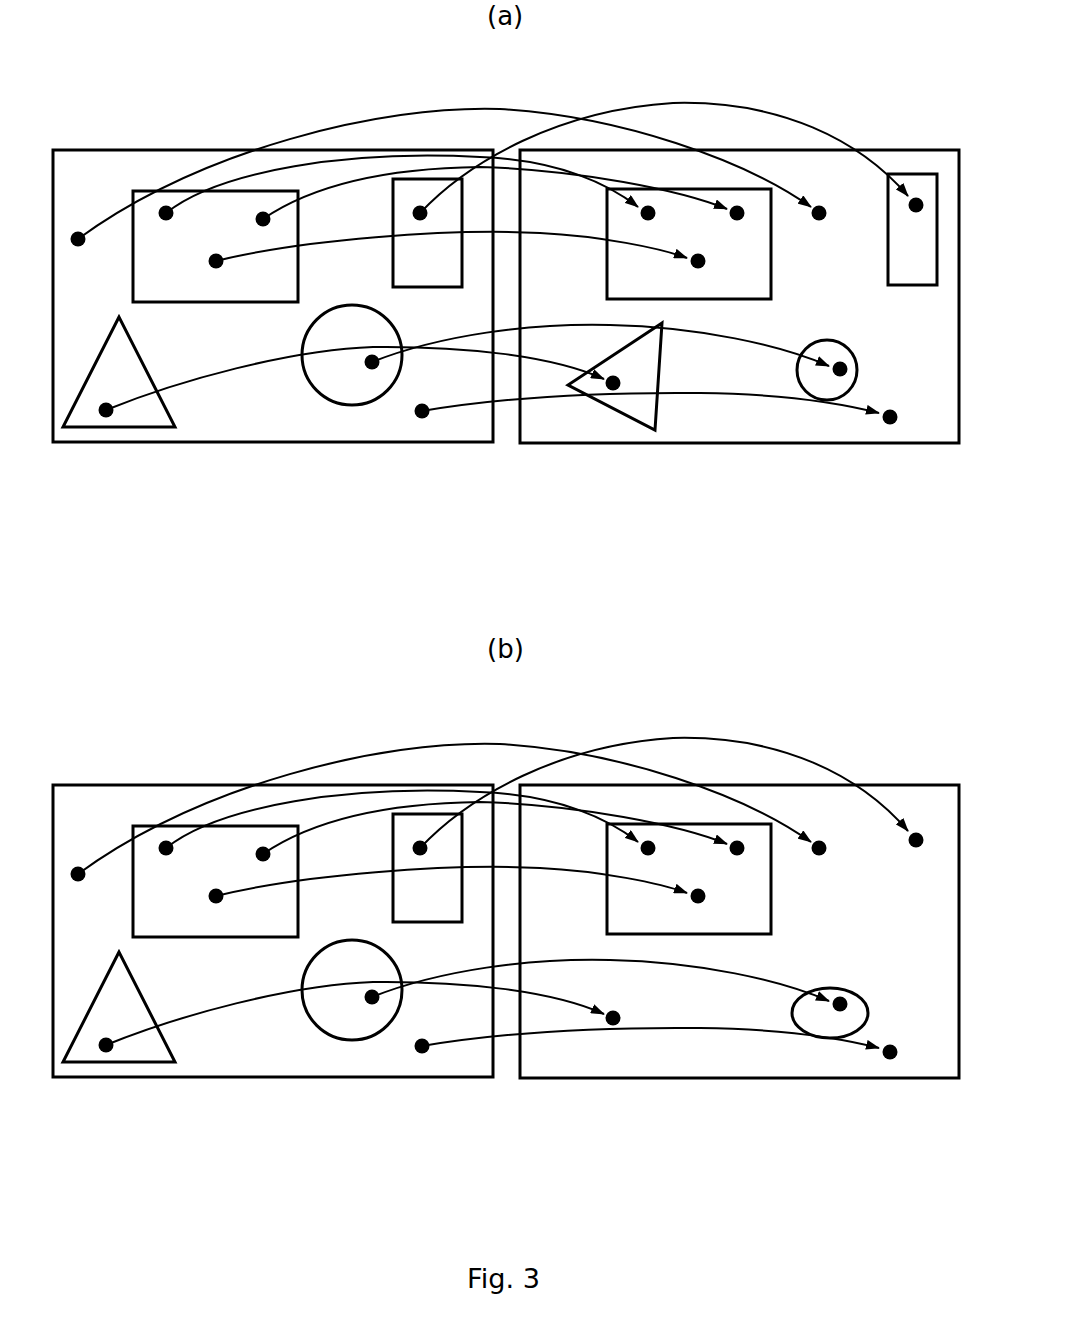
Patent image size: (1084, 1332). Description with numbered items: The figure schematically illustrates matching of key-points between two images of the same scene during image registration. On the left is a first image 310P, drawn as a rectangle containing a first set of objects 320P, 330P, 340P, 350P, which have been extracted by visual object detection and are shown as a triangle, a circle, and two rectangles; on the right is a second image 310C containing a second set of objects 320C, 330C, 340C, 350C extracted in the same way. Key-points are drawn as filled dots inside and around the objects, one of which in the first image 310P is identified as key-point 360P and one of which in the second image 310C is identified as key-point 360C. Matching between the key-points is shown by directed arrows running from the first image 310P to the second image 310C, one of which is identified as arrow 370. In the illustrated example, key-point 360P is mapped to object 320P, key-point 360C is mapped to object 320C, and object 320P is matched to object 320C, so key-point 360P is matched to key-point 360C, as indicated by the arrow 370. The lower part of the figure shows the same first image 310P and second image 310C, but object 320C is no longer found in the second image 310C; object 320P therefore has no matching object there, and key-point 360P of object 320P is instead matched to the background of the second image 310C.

The first image 310P is at (277, 437).
The second image 310C is at (723, 438).
The object of the first set 320P is at (147, 416).
The object of the second set 320C is at (635, 430).
The object of the first set 330P is at (368, 397).
The object of the second set 330C is at (823, 403).
The object of the first set 340P is at (197, 192).
The object of the second set 340C is at (643, 198).
The object of the first set 350P is at (422, 184).
The object of the second set 350C is at (910, 184).
The key-point in the first image 360P is at (106, 416).
The key-point in the second image 360C is at (603, 387).
The arrow 370 is at (235, 366).